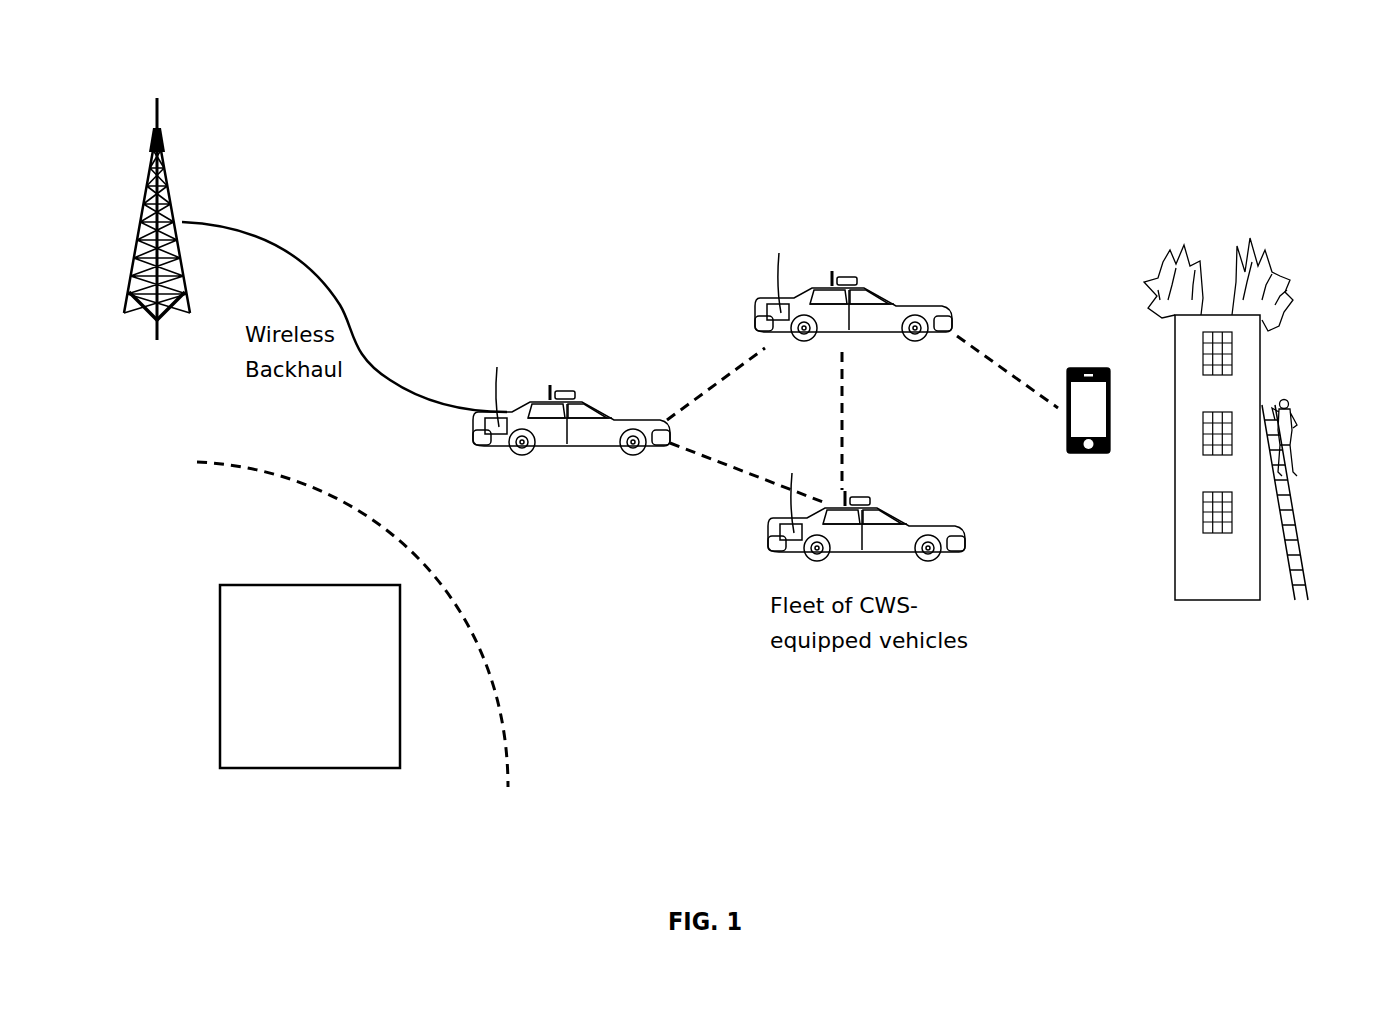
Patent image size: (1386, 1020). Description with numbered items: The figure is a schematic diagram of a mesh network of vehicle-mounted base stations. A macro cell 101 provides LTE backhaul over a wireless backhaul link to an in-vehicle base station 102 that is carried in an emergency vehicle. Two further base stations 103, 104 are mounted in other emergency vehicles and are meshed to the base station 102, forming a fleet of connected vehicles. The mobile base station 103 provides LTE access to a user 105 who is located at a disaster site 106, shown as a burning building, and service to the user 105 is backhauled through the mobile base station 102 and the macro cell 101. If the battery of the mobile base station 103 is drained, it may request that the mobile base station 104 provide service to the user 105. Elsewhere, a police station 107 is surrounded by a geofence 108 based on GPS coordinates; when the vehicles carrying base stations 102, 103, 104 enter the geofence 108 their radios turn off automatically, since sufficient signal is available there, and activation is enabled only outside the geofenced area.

The macro cell 101 is at (165, 142).
The in-vehicle base station 102 is at (592, 397).
The mobile base station 103 is at (883, 277).
The mobile base station 104 is at (880, 500).
The user 105 is at (1085, 365).
The disaster site 106 is at (1283, 280).
The police station 107 is at (232, 583).
The geofence 108 is at (508, 737).